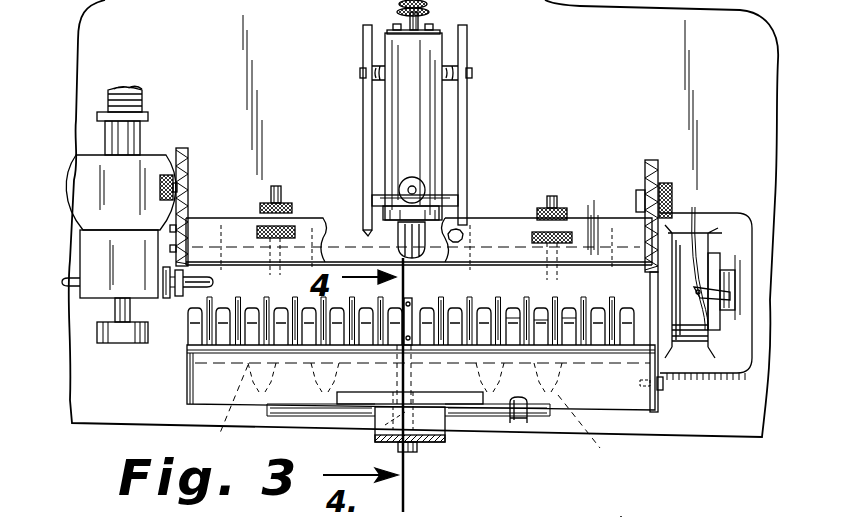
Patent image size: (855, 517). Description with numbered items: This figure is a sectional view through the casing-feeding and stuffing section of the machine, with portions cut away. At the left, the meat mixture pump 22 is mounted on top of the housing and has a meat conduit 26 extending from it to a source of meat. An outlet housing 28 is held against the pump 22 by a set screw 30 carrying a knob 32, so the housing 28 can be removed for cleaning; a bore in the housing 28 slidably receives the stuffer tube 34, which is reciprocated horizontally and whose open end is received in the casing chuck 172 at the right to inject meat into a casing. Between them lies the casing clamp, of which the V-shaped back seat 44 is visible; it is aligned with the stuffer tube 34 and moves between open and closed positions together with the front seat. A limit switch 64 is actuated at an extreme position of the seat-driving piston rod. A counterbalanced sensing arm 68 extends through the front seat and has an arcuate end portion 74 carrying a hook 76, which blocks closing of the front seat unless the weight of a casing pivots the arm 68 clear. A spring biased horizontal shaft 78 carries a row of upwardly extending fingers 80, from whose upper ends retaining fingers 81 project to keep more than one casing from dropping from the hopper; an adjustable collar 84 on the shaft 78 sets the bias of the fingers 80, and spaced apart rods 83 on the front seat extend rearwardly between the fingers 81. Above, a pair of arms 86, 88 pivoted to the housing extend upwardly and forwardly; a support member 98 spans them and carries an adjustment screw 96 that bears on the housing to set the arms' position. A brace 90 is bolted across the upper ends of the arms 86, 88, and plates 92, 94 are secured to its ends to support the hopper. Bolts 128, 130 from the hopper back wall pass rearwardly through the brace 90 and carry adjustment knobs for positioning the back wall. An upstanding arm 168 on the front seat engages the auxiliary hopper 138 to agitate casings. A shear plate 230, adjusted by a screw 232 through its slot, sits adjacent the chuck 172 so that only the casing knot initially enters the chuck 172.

The meat mixture pump 22 is at (85, 187).
The meat conduit 26 is at (140, 88).
The outlet housing 28 is at (110, 280).
The set screw 30 is at (112, 307).
The knob 32 is at (133, 333).
The stuffer tube 34 is at (68, 283).
The back seat 44 is at (347, 253).
The limit switch 64 is at (402, 55).
The counterbalanced sensing arm 68 is at (400, 420).
The arcuate end portion 74 is at (408, 300).
The hook 76 is at (405, 343).
The spring biased horizontal shaft 78 is at (292, 418).
The fingers 80 is at (412, 418).
The retaining fingers 81 is at (567, 317).
The spaced apart rods 83 is at (472, 305).
The adjustable collar 84 is at (515, 423).
The arm 86 is at (467, 107).
The arm 88 is at (365, 108).
The brace 90 is at (593, 238).
The plate 92 is at (643, 163).
The plate 94 is at (190, 160).
The adjustment screw 96 is at (412, 190).
The support member 98 is at (443, 200).
The bolt 128 is at (550, 200).
The bolt 130 is at (280, 188).
The auxiliary hopper 138 is at (622, 516).
The upstanding arm 168 is at (428, 445).
The casing chuck 172 is at (692, 327).
The shear plate 230 is at (657, 400).
The screw 232 is at (662, 382).